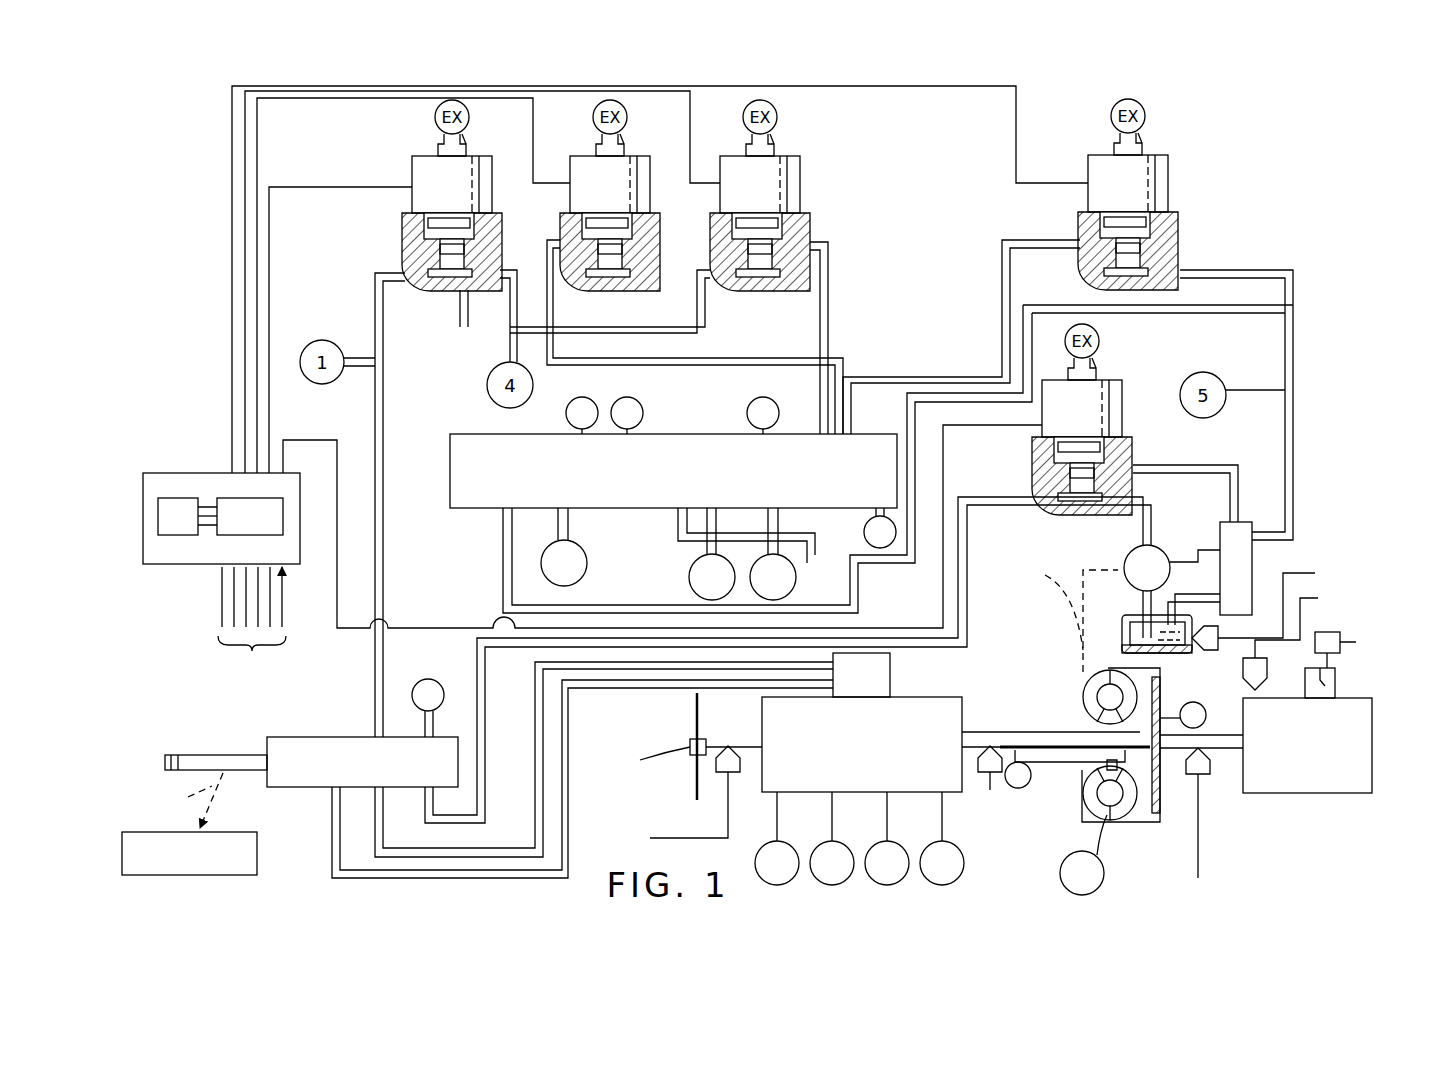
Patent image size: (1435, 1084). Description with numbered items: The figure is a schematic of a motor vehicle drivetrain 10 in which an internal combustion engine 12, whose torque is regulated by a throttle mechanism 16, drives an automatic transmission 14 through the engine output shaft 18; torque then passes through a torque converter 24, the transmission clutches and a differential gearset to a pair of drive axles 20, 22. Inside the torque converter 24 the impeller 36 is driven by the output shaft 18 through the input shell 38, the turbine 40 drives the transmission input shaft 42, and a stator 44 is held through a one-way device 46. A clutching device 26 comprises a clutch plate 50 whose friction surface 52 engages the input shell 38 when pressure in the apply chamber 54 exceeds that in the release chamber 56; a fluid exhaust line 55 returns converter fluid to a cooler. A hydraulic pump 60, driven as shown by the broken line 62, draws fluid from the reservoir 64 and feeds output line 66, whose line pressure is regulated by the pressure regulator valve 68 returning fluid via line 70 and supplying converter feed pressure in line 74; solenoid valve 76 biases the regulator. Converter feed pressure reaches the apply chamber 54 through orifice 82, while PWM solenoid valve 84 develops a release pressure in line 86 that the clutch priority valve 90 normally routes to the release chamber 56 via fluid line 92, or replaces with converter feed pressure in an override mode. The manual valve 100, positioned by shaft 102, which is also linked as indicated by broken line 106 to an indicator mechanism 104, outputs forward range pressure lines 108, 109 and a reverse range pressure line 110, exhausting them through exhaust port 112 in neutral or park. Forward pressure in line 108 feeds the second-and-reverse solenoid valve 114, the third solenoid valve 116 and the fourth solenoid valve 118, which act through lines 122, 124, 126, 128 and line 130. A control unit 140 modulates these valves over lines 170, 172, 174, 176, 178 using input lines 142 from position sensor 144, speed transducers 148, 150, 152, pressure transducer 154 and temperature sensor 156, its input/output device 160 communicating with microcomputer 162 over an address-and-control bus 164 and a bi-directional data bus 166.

The motor vehicle drivetrain 10 is at (1262, 852).
The internal combustion engine 12 is at (1322, 778).
The automatic transmission 14 is at (930, 707).
The throttle mechanism 16 is at (1335, 684).
The engine output shaft 18 is at (1215, 741).
The drive axle 20 is at (697, 710).
The drive axle 22 is at (697, 783).
The torque converter 24 is at (1062, 672).
The clutching device 26 is at (1162, 701).
The impeller 36 is at (1087, 807).
The input shell 38 is at (1105, 818).
The turbine 40 is at (1125, 788).
The transmission input shaft 42 is at (1017, 746).
The stator 44 is at (1110, 768).
The one-way device 46 is at (1108, 725).
The clutch plate 50 is at (1150, 790).
The friction surface 52 is at (1152, 800).
The apply chamber 54 is at (1152, 735).
The fluid exhaust line 55 is at (1018, 788).
The release chamber 56 is at (1152, 745).
The hydraulic pump 60 is at (1125, 562).
The broken line 62 is at (1065, 616).
The fluid reservoir 64 is at (1122, 625).
The pump output line 66 is at (967, 512).
The pressure regulator valve 68 is at (1252, 562).
The line 70 is at (1215, 575).
The line 74 is at (1245, 270).
The solenoid valve 76 is at (1120, 410).
The orifice 82 is at (1258, 385).
The PWM solenoid valve 84 is at (1168, 192).
The line 86 is at (1060, 240).
The clutch priority valve 90 is at (450, 468).
The fluid line 92 is at (718, 520).
The manual valve 100 is at (330, 740).
The shaft 102 is at (205, 758).
The indicator mechanism 104 is at (258, 847).
The broken line 106 is at (183, 800).
The forward range pressure line 108 is at (383, 496).
The forward range pressure line 109 is at (502, 850).
The reverse range pressure line 110 is at (330, 836).
The exhaust port 112 is at (422, 718).
The 2/R solenoid valve 114 is at (800, 192).
The 3rd solenoid valve 116 is at (648, 188).
The 4th solenoid valve 118 is at (490, 188).
The line 122 is at (830, 290).
The line 124 is at (780, 518).
The line 126 is at (553, 310).
The line 128 is at (570, 520).
The line 130 is at (510, 312).
The control unit 140 is at (163, 473).
The input lines 142 is at (252, 622).
The position sensor 144 is at (1340, 652).
The speed transducer 148 is at (1205, 777).
The speed transducer 150 is at (983, 762).
The speed transducer 152 is at (733, 768).
The pressure transducer 154 is at (1262, 670).
The temperature sensor 156 is at (1212, 650).
The input/output device 160 is at (238, 535).
The microcomputer 162 is at (183, 535).
The address-and-control bus 164 is at (210, 506).
The bi-directional data bus 166 is at (207, 514).
The line 170 is at (310, 440).
The line 172 is at (232, 150).
The line 174 is at (245, 175).
The line 176 is at (257, 243).
The line 178 is at (269, 285).